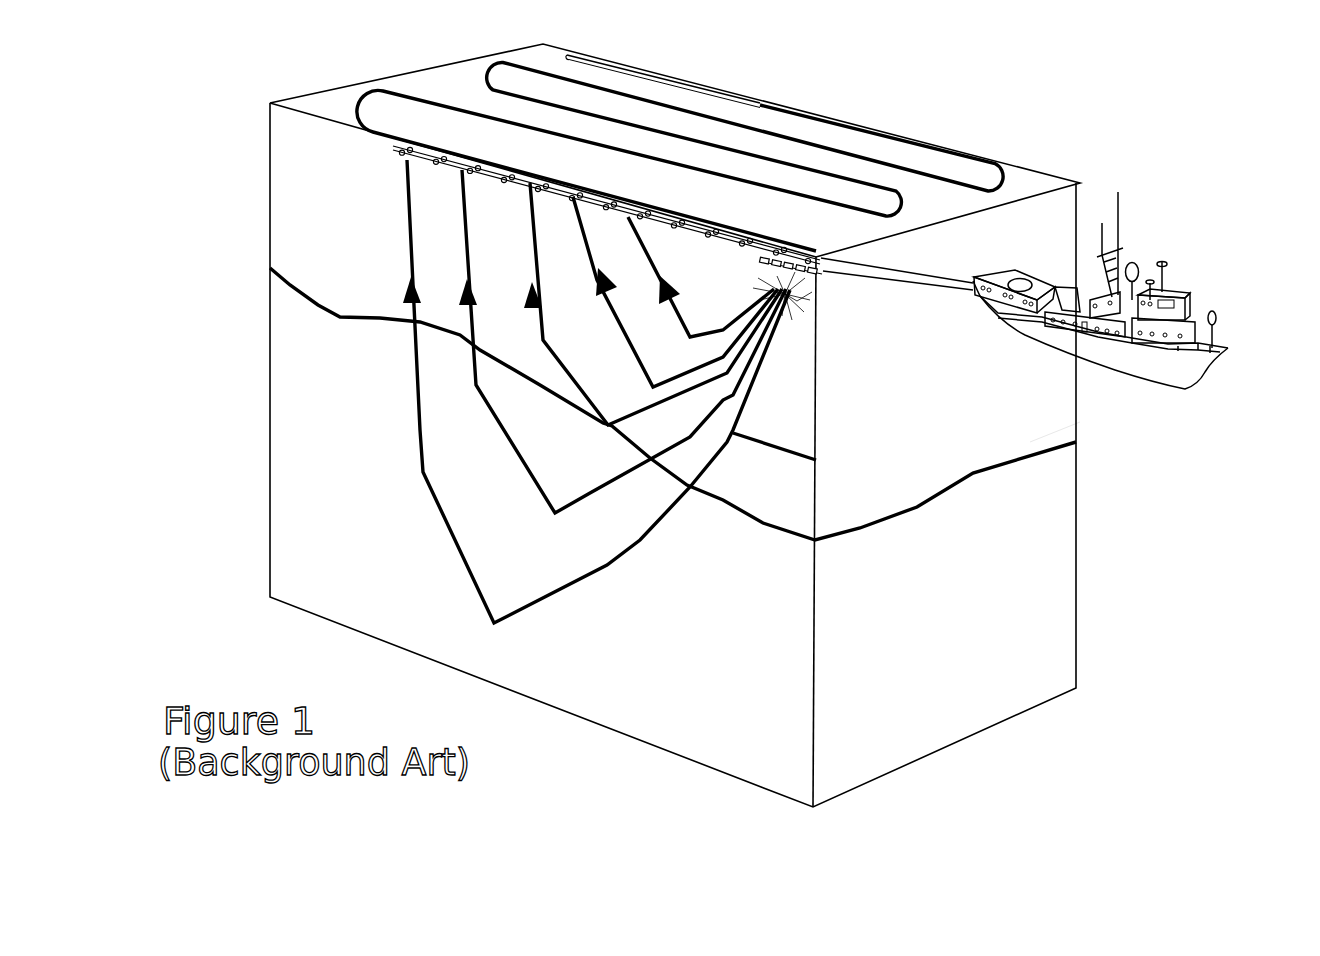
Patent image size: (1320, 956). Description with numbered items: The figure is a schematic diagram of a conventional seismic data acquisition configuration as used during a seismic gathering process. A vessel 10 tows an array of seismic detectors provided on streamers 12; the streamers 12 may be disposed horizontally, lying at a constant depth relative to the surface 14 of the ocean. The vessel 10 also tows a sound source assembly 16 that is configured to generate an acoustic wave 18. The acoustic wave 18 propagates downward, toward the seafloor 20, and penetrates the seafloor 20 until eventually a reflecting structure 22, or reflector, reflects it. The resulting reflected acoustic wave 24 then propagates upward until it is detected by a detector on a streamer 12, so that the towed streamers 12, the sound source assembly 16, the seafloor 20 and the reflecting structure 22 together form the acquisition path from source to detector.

The vessel 10 is at (1192, 282).
The streamers 12 is at (598, 190).
The surface of the ocean 14 is at (438, 85).
The sound source assembly 16 is at (816, 256).
The acoustic wave 18 is at (816, 460).
The seafloor 20 is at (1036, 444).
The reflecting structure 22 is at (608, 425).
The reflected acoustic wave 24 is at (410, 363).